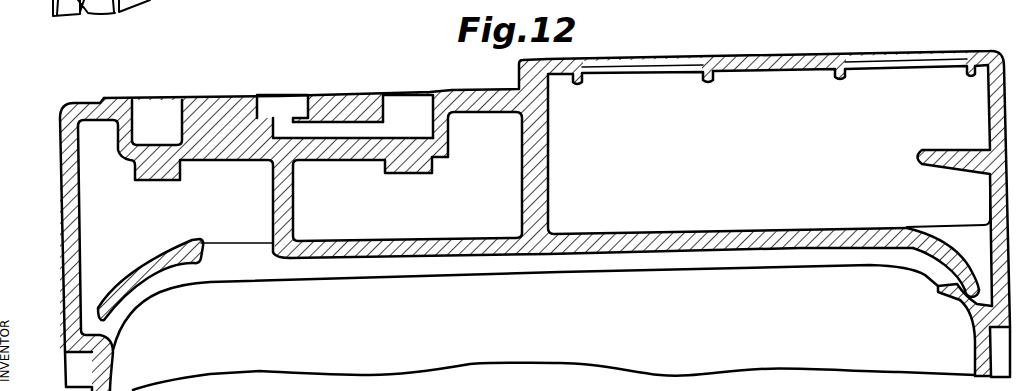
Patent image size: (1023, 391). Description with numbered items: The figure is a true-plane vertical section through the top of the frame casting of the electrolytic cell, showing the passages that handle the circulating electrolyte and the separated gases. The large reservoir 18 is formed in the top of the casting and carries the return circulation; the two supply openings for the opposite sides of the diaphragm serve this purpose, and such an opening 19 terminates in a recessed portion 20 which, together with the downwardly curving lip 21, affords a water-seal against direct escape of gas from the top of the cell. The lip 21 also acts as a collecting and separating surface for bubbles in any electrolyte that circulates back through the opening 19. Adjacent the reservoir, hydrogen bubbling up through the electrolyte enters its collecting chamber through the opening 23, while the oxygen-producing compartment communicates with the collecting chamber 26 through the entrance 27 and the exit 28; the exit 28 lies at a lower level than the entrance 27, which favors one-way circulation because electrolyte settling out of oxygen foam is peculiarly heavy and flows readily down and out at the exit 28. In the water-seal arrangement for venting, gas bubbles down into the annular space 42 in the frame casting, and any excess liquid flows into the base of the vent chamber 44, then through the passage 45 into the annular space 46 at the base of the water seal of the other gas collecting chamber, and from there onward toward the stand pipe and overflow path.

The reservoir 18 is at (770, 182).
The supply opening 19 is at (948, 232).
The recessed portion 20 is at (956, 276).
The downwardly curving lip 21 is at (962, 277).
The opening 23 is at (407, 176).
The collecting chamber 26 is at (184, 189).
The entrance 27 is at (185, 279).
The exit 28 is at (92, 322).
The annular space 42 is at (157, 122).
The vent chamber 44 is at (282, 108).
The passage 45 is at (353, 130).
The annular space 46 is at (408, 116).